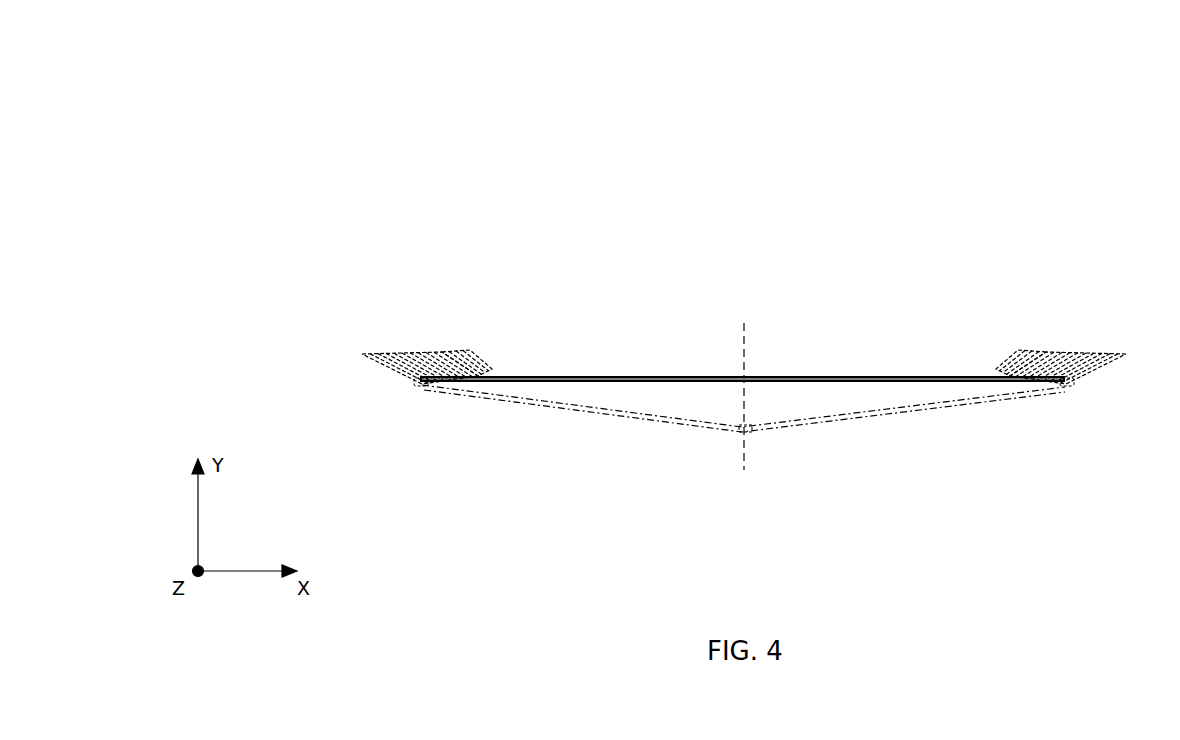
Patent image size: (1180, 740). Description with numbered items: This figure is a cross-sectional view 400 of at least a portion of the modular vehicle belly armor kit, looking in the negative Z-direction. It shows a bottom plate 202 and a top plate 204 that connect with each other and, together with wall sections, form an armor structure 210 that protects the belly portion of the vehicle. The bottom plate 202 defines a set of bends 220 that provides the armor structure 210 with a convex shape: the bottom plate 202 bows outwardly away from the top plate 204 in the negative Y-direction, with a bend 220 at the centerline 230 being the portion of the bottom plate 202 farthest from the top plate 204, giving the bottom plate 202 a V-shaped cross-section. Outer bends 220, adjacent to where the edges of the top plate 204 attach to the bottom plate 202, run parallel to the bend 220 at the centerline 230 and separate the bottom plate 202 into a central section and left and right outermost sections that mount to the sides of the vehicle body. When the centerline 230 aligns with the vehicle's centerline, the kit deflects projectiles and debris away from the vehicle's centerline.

The cross-sectional view 400 is at (210, 73).
The armor structure 210 is at (500, 253).
The centerline 230 is at (742, 348).
The top plate 204 is at (890, 376).
The bottom plate 202 is at (913, 405).
The bends 220 is at (722, 448).